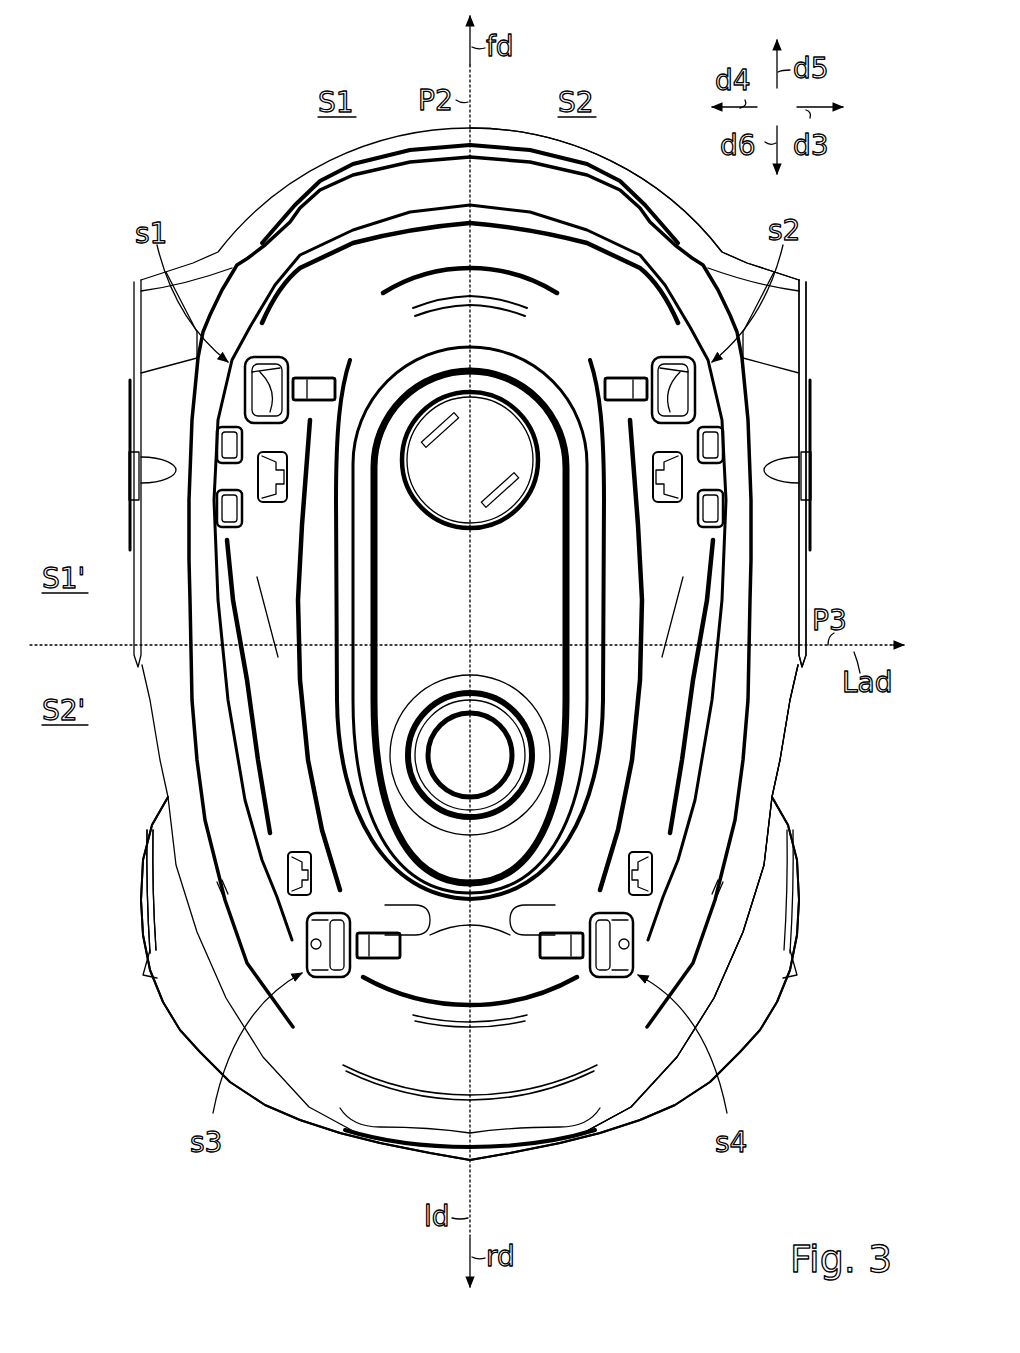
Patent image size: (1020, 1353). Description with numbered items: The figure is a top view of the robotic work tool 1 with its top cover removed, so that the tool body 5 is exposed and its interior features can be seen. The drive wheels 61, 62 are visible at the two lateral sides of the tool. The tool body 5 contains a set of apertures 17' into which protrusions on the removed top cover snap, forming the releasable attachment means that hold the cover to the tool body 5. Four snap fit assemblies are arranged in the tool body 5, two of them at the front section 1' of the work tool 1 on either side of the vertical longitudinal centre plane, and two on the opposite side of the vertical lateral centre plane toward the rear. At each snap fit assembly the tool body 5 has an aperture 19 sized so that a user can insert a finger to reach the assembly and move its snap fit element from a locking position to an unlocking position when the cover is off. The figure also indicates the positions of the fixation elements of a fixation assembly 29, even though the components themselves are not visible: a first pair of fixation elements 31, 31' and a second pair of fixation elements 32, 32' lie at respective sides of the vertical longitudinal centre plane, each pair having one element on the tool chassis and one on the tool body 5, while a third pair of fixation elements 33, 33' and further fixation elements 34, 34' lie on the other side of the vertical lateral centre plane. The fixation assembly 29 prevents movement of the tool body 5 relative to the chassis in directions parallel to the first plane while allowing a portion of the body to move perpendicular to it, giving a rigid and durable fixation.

The robotic work tool 1 is at (450, 614).
The front section 1' is at (684, 630).
The tool body 5 is at (775, 751).
The apertures 17' is at (470, 673).
The apertures 19 is at (247, 398).
The fixation assembly 29 is at (125, 1116).
The fixation element 31 is at (337, 357).
The fixation element 31' is at (314, 389).
The fixation element 32 is at (590, 357).
The fixation element 32' is at (626, 389).
The fixation element 33 is at (352, 993).
The fixation element 33' is at (378, 945).
The fixation element 34 is at (574, 993).
The fixation element 34' is at (561, 945).
The drive wheel 61 is at (134, 432).
The drive wheel 62 is at (806, 432).